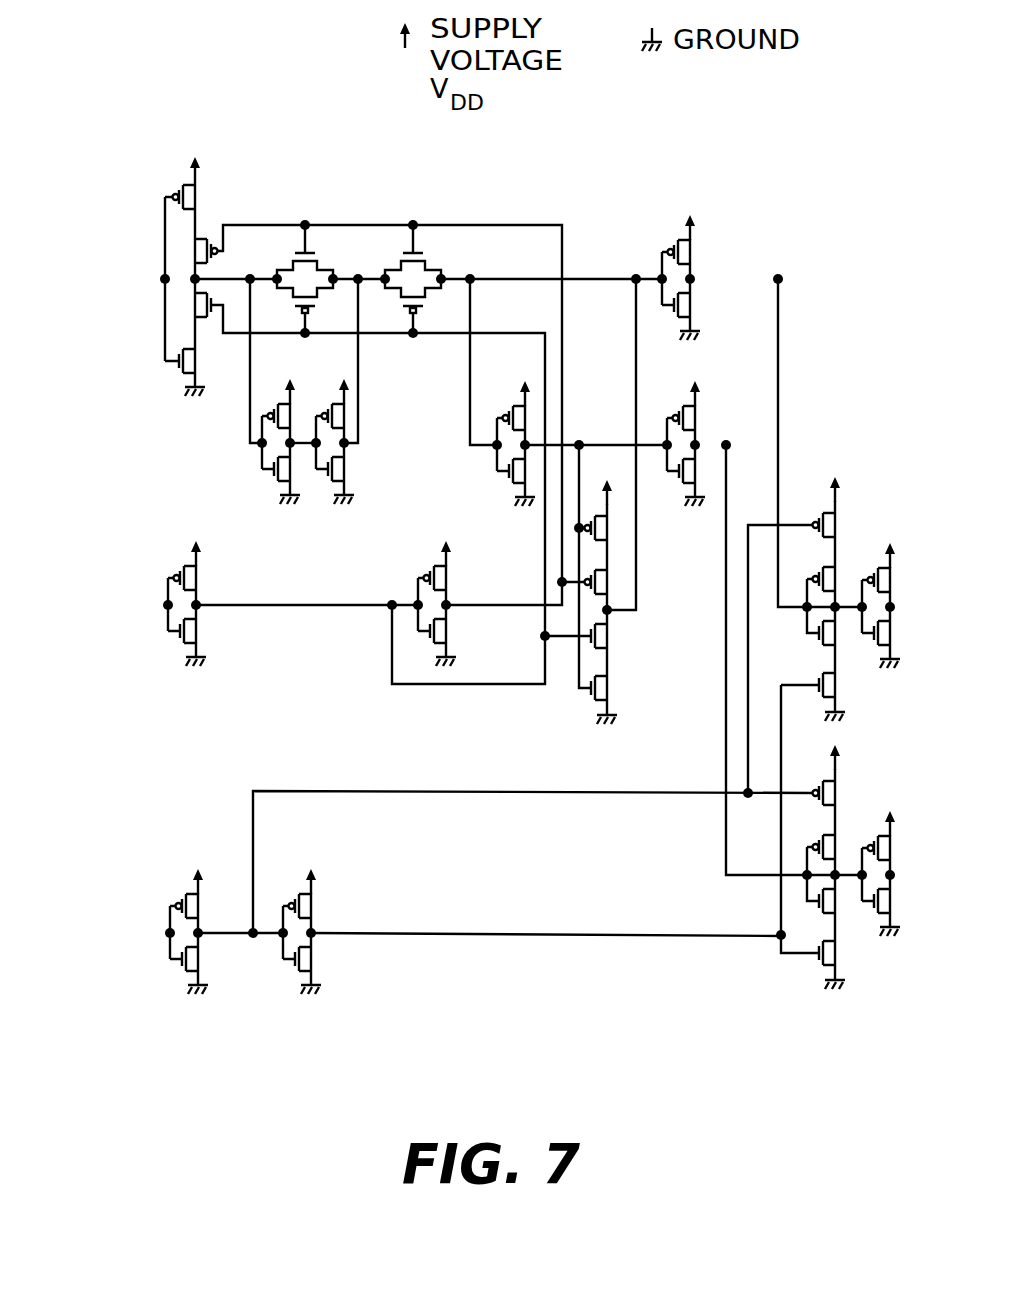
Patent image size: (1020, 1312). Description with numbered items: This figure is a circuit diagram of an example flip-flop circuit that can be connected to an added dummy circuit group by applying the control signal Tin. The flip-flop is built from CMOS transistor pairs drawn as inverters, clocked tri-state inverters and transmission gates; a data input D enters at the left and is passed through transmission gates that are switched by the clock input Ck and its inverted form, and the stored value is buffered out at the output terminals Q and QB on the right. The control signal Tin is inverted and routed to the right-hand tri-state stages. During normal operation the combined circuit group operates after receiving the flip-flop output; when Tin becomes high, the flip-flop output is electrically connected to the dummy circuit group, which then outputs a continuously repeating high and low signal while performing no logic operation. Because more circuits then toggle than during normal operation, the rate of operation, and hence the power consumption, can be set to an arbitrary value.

The data input terminal D is at (165, 279).
The clock input terminal Ck is at (168, 605).
The control signal Tin is at (170, 933).
The output terminal Q is at (690, 279).
The inverted output terminal QB is at (695, 445).